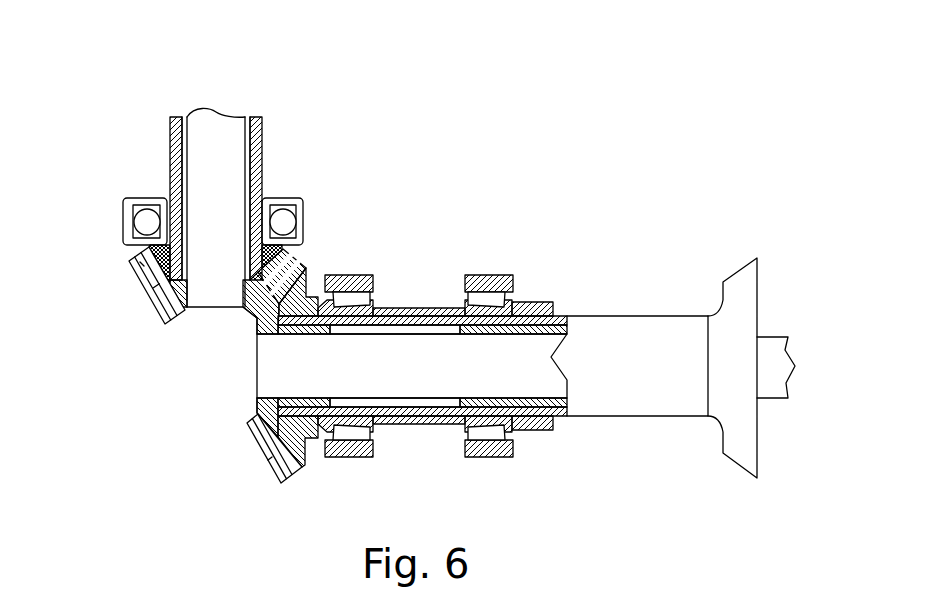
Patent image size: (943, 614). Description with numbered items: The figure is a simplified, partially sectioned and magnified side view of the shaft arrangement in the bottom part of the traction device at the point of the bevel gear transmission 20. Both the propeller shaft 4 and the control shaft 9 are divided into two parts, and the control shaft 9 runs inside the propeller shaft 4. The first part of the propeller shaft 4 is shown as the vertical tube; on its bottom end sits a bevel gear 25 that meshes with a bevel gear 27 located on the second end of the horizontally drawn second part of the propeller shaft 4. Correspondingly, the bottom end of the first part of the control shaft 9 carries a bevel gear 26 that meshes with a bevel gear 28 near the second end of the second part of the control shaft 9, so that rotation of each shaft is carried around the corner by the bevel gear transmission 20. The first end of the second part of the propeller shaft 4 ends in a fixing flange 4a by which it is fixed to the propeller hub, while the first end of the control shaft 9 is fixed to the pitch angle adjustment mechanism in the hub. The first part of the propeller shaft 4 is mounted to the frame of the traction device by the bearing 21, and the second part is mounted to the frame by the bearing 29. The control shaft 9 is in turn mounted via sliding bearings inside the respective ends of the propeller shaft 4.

The propeller shaft 4 is at (170, 147).
The fixing flange 4a is at (740, 282).
The control shaft 9 is at (218, 128).
The bevel gear transmission 20 is at (354, 218).
The bearing 21 is at (300, 205).
The bevel gear 25 is at (145, 265).
The bevel gear 26 is at (162, 302).
The bevel gear 27 is at (270, 463).
The bevel gear 28 is at (252, 433).
The bearing 29 is at (489, 277).